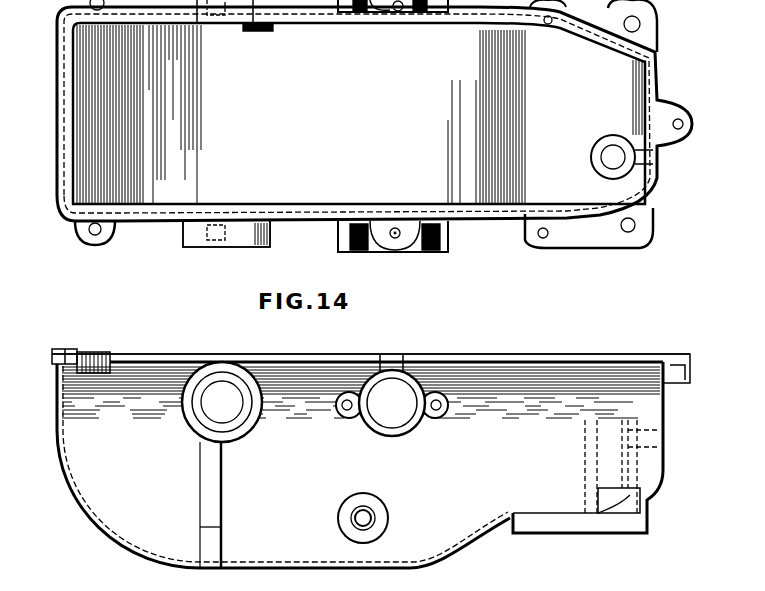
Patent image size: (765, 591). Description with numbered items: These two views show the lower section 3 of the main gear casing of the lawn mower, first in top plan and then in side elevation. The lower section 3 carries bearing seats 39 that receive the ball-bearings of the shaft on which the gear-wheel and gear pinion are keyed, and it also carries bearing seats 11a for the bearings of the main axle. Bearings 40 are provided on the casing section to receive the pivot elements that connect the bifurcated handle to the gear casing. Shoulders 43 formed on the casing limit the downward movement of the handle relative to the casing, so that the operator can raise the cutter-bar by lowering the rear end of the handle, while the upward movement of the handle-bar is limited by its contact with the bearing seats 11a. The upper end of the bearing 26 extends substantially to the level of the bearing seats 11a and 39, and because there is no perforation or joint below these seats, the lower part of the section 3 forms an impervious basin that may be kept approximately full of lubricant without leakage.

In FIG. 14, the lower section 3 is at (510, 385).
In FIG. 13, the bearing seats 11a is at (183, 245).
In FIG. 14, the bearing seats 11a is at (222, 402).
In FIG. 13, the bearing 26 is at (598, 142).
In FIG. 14, the bearing 26 is at (598, 438).
In FIG. 14, the bearing seats 39 is at (392, 395).
In FIG. 14, the bearings 40 is at (368, 516).
In FIG. 13, the shoulders 43 is at (210, 30).
In FIG. 14, the shoulders 43 is at (203, 528).